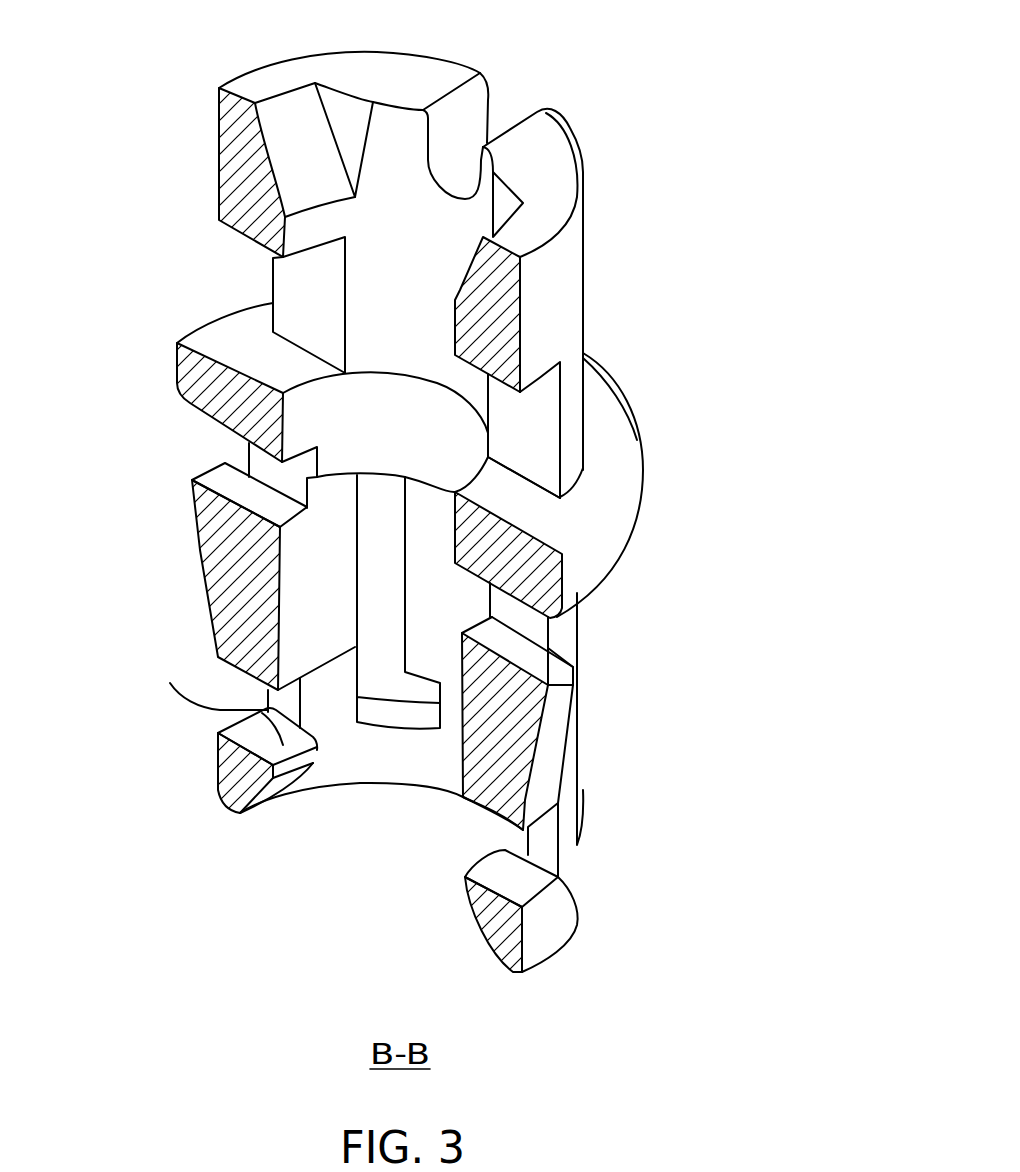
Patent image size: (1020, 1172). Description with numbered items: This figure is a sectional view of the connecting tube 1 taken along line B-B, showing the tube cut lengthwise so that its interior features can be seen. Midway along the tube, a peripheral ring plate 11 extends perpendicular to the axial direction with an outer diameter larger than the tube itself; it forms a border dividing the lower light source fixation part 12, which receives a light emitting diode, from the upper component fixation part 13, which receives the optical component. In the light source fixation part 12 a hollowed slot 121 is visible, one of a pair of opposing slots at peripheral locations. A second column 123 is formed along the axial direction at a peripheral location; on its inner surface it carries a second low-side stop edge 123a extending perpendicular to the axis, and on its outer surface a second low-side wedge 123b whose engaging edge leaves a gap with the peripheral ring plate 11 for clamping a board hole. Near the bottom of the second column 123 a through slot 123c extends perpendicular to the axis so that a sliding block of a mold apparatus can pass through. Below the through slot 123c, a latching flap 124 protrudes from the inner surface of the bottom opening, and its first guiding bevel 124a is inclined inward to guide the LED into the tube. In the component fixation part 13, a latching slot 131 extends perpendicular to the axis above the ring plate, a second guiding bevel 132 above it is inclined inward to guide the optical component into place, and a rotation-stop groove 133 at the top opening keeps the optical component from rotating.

The connecting tube 1 is at (625, 112).
The peripheral ring plate 11 is at (609, 538).
The light source fixation part 12 is at (622, 622).
The component fixation part 13 is at (668, 120).
The hollowed slot 121 is at (357, 760).
The second column 123 is at (547, 753).
The second low-side stop edge 123a is at (477, 807).
The second low-side wedge 123b is at (547, 667).
The through slot 123c is at (542, 850).
The latching flap 124 is at (267, 710).
The first guiding bevel 124a is at (284, 785).
The latching slot 131 is at (533, 450).
The second guiding bevel 132 is at (297, 147).
The rotation-stop groove 133 is at (472, 123).